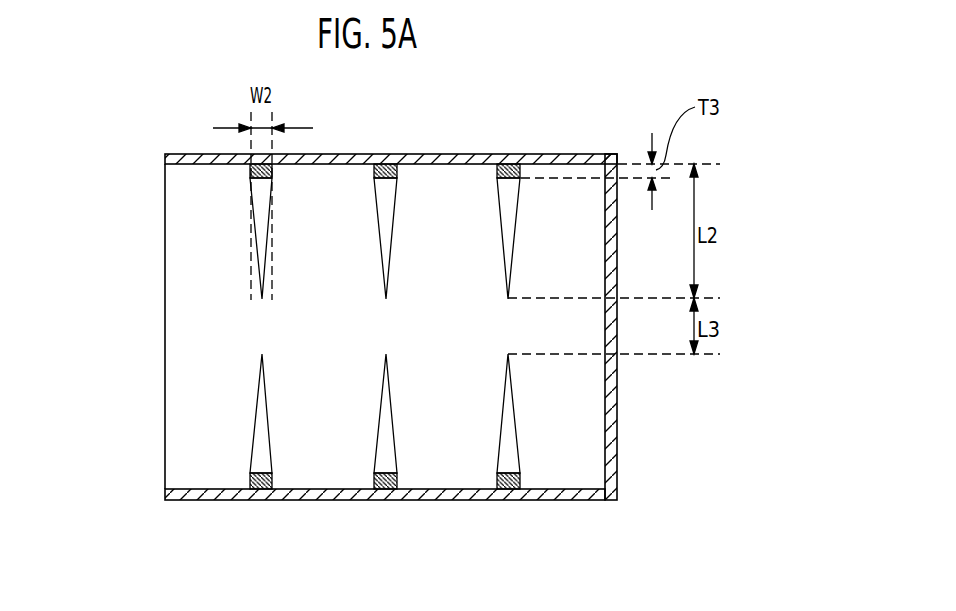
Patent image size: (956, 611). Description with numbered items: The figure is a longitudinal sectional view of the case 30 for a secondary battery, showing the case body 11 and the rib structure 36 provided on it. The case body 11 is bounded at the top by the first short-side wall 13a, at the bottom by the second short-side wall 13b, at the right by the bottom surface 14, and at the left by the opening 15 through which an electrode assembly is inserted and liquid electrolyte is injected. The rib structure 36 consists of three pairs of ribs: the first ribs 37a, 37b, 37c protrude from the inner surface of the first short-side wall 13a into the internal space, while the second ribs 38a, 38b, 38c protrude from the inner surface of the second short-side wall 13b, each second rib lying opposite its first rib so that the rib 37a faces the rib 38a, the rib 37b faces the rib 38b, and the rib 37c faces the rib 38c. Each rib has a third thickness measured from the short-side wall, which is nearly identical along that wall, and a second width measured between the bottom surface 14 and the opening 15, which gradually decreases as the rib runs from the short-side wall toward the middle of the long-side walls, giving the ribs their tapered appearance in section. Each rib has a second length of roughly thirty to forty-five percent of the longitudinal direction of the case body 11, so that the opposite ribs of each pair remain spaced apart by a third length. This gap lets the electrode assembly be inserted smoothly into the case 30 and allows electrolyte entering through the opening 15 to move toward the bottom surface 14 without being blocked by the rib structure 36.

The case for secondary battery 30 is at (118, 167).
The case body 11 is at (490, 149).
The first short-side wall 13a is at (590, 153).
The second short-side wall 13b is at (589, 501).
The bottom surface 14 is at (612, 394).
The opening 15 is at (165, 428).
The rib structure 36 is at (244, 460).
The 1A-th rib 37a is at (265, 199).
The 1B-th rib 37b is at (382, 199).
The 1C-th rib 37c is at (507, 199).
The 2A-th rib 38a is at (265, 457).
The 2B-th rib 38b is at (390, 457).
The 2C-th rib 38c is at (503, 456).